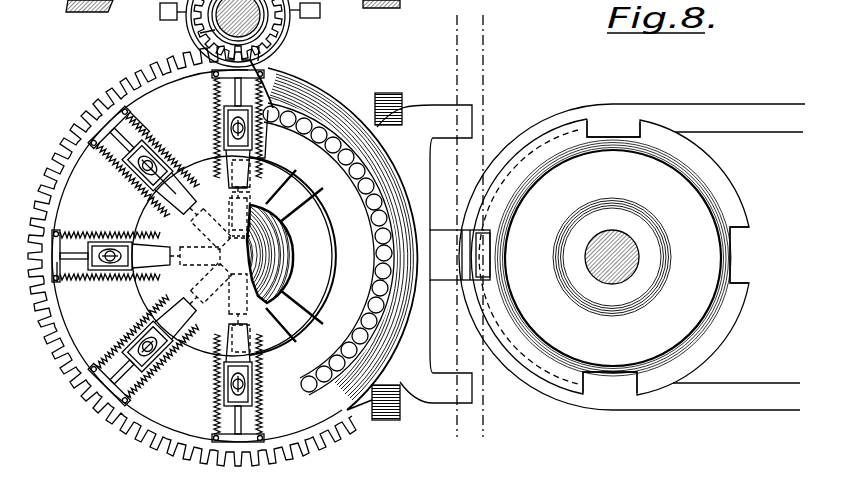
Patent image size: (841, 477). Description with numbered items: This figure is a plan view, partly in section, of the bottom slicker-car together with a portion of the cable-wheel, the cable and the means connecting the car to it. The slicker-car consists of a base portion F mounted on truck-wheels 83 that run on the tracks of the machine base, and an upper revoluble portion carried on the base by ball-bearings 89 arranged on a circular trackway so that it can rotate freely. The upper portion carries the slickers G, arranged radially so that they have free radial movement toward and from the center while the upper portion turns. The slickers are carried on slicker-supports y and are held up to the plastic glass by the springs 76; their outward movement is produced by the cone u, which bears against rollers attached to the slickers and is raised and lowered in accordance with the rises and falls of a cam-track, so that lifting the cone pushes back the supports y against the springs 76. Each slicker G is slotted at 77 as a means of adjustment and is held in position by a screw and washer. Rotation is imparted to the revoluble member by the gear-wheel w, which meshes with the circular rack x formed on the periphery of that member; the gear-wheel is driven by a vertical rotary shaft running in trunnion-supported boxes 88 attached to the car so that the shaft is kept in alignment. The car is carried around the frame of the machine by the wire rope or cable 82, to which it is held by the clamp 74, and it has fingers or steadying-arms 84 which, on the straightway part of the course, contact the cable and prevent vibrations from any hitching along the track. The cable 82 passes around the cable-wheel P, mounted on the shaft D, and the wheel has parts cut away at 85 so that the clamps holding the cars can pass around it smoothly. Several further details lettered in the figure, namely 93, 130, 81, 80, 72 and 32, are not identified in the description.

The circular rack x is at (140, 69).
The cone u is at (234, 256).
The spokes 93 is at (294, 256).
The slicker-car F is at (322, 92).
The ball-bearings 89 is at (362, 192).
The springs 76 is at (174, 256).
The pivot bar 130 is at (146, 113).
The slot 77 is at (166, 183).
The slicker-supports y is at (79, 262).
The slickers G is at (241, 255).
The pin 81 is at (241, 182).
The slide 80 is at (241, 211).
The pin 72 is at (241, 230).
The trunnion-supported boxes 88 is at (291, 38).
The gear-wheel w is at (200, 33).
The frame part 32 is at (398, 5).
The truck-wheels 83 is at (388, 262).
The steadying-arms 84 is at (472, 120).
The clamp 74 is at (460, 255).
The cable-wheel P is at (716, 352).
The cable 82 is at (637, 253).
The cut-away parts 85 is at (675, 262).
The shaft D is at (598, 262).